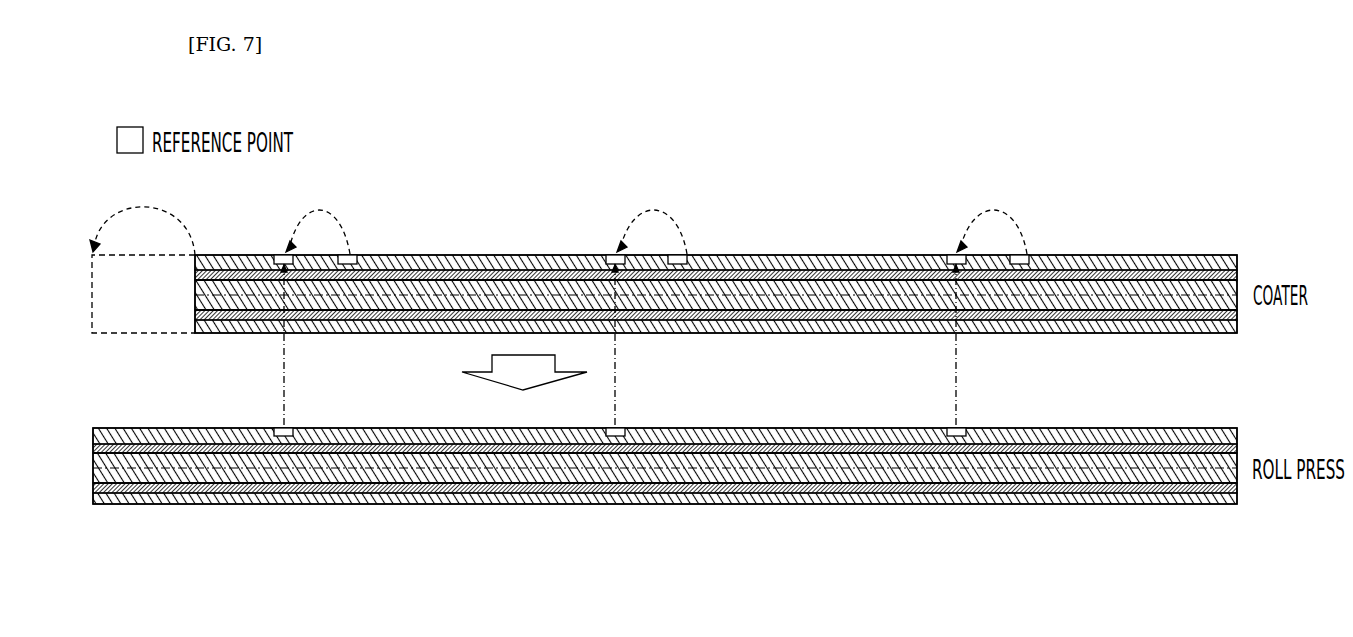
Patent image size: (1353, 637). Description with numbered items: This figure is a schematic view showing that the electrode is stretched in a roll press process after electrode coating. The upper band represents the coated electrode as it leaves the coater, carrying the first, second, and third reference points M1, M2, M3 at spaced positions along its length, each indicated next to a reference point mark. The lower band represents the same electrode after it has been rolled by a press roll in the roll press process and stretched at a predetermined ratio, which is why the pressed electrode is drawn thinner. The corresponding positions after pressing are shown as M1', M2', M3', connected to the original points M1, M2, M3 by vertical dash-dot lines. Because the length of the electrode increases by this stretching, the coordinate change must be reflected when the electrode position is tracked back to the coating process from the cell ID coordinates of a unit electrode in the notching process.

The first reference point M1 is at (998, 319).
The second reference point M2 is at (658, 319).
The third reference point M3 is at (326, 319).
The first mark after roll press M1' is at (970, 418).
The second mark after roll press M2' is at (628, 418).
The third mark after roll press M3' is at (297, 418).